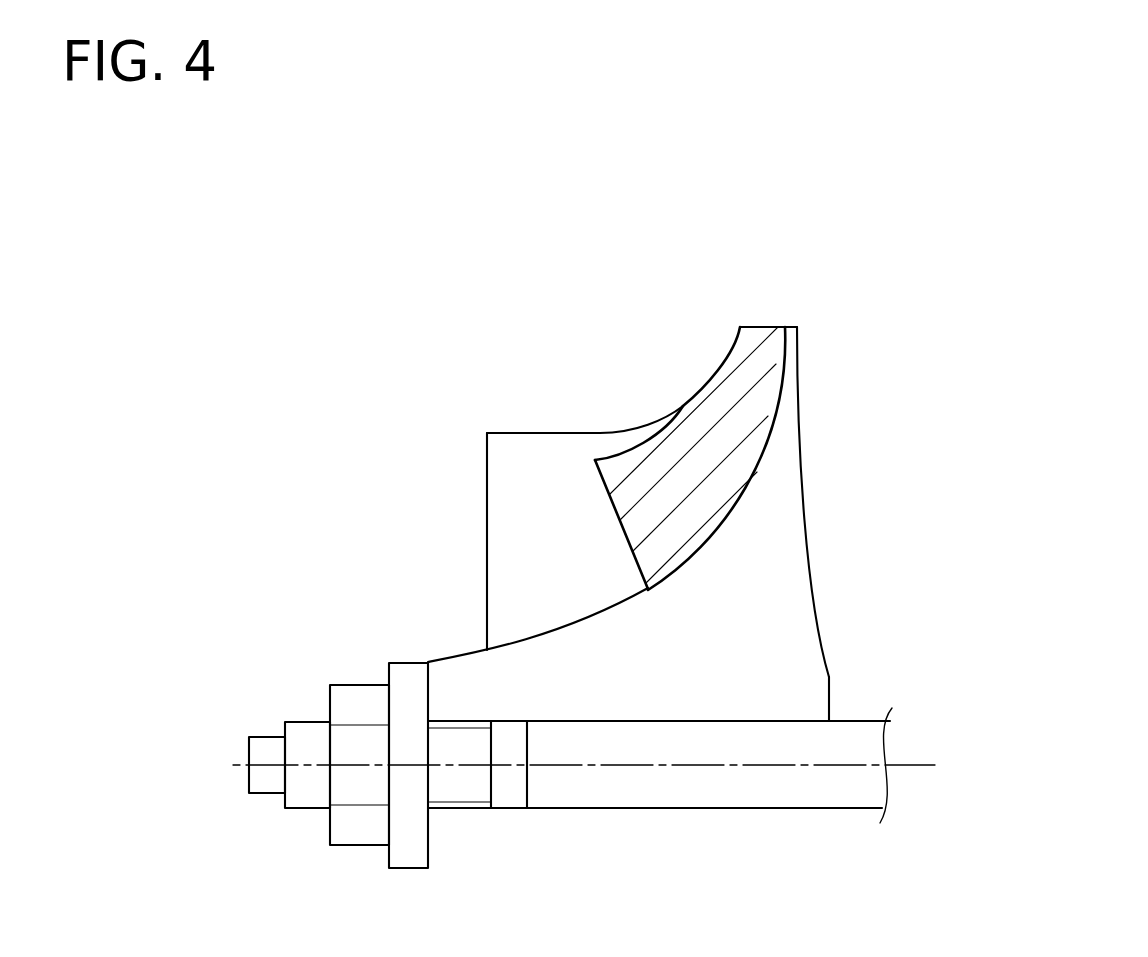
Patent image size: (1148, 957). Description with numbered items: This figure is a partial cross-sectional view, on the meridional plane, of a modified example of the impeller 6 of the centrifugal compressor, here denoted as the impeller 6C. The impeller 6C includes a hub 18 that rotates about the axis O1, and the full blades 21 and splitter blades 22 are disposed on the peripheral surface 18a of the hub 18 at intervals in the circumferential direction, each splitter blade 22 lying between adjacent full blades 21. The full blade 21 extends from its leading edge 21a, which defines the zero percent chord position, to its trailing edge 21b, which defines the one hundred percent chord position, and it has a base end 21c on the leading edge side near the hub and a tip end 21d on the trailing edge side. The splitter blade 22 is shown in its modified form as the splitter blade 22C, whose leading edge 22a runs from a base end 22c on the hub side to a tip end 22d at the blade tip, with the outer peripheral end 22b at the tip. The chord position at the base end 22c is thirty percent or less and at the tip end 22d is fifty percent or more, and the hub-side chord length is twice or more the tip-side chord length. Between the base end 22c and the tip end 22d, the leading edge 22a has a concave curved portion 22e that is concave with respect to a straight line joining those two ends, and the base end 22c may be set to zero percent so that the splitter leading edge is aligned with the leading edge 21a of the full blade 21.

The impeller 6 is at (504, 479).
The impeller 6C is at (249, 302).
The hub 18 is at (570, 727).
The peripheral surface 18a is at (423, 723).
The full blade 21 is at (535, 432).
The leading edge 21a is at (437, 541).
The trailing edge 21b is at (790, 282).
The base end 21c is at (556, 636).
The tip end 21d is at (604, 388).
The splitter blade 22 is at (656, 436).
The splitter blade 22C is at (656, 436).
The leading edge 22a is at (587, 524).
The blade outer peripheral end 22b is at (765, 327).
The base end 22c is at (716, 481).
The tip end 22d is at (666, 340).
The concave curved portion 22e is at (622, 384).
The axis O1 is at (228, 765).